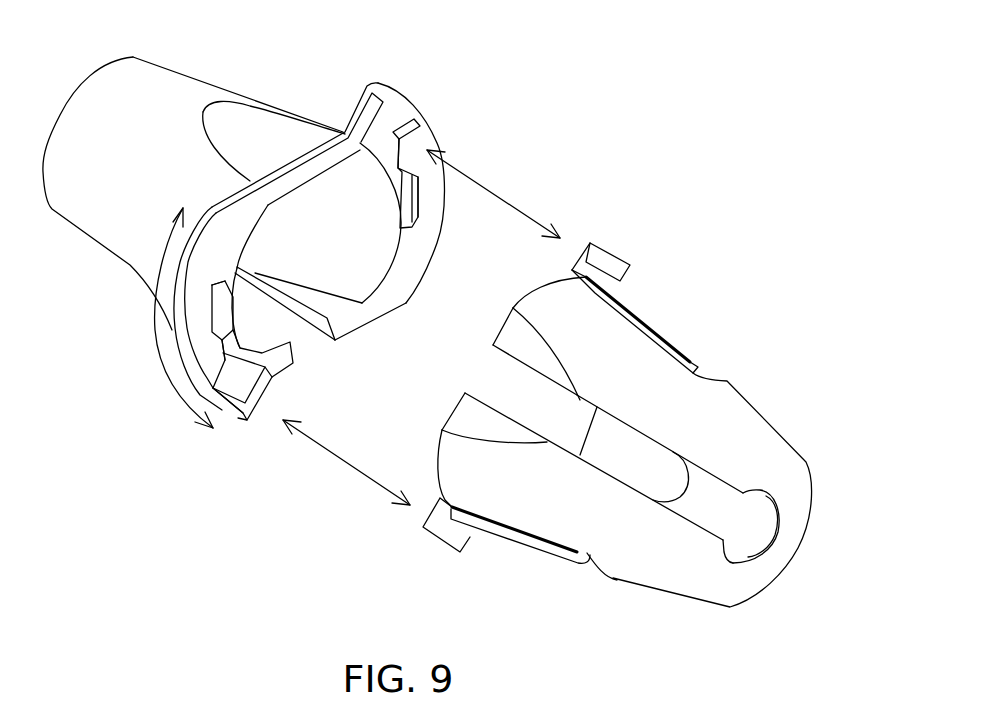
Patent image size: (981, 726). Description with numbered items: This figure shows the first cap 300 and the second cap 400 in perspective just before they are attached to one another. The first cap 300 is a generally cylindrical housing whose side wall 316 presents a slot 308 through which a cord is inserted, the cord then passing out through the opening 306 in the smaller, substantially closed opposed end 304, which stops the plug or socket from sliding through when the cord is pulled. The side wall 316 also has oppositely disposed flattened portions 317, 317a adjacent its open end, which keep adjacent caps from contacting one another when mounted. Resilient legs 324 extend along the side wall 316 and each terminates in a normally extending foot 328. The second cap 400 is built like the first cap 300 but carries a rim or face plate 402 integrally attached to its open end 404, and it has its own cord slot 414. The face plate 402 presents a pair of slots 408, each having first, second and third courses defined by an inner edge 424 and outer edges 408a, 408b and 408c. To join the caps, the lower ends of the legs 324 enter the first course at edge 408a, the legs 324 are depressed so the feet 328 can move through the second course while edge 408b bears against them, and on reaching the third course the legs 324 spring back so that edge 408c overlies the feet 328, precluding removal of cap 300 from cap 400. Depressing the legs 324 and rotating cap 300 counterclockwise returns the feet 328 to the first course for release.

The first cap 300 is at (774, 256).
The opposed end 304 is at (727, 580).
The opening 306 is at (745, 527).
The slot 308 is at (566, 418).
The side wall 316 is at (730, 420).
The flattened portion 317 is at (500, 336).
The flattened portion 317a is at (608, 470).
The resilient leg 324 is at (703, 353).
The foot/flange 328 is at (605, 260).
The second cap 400 is at (300, 66).
The rim/face plate 402 is at (413, 263).
The open end 404 is at (363, 230).
The slot 408 is at (419, 205).
The outer edge / first course 408a is at (403, 113).
The outer edge / second course 408b is at (405, 150).
The outer edge / third course 408c is at (419, 185).
The slot 414 is at (297, 325).
The inner edge 424 is at (378, 140).